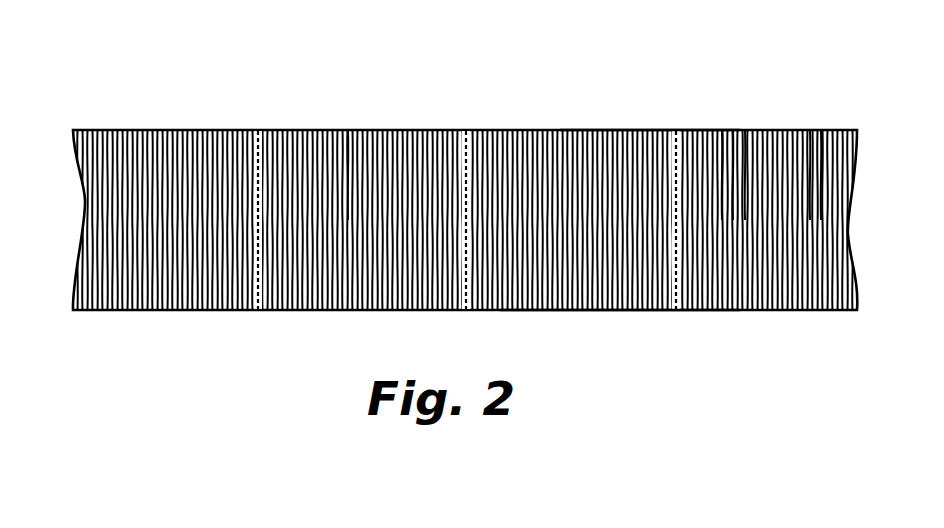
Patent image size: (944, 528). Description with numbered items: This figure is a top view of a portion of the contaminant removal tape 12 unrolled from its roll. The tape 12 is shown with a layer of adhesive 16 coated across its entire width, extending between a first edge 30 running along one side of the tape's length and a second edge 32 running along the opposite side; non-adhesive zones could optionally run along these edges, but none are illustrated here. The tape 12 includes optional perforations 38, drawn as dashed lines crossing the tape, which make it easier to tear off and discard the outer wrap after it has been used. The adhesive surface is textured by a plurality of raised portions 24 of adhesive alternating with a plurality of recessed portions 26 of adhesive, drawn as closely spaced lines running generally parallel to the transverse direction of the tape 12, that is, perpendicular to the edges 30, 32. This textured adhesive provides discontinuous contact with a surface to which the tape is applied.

The contaminant removal tape 12 is at (550, 150).
The layer of adhesive 16 is at (348, 150).
The raised portions of adhesive 24 is at (810, 140).
The recessed portions of adhesive 26 is at (721, 133).
The first edge 30 is at (622, 312).
The second edge 32 is at (641, 132).
The perforations 38 is at (259, 152).